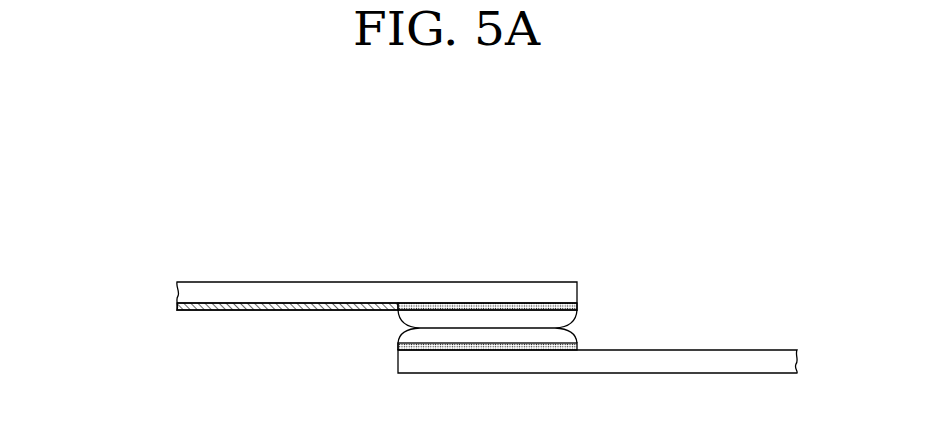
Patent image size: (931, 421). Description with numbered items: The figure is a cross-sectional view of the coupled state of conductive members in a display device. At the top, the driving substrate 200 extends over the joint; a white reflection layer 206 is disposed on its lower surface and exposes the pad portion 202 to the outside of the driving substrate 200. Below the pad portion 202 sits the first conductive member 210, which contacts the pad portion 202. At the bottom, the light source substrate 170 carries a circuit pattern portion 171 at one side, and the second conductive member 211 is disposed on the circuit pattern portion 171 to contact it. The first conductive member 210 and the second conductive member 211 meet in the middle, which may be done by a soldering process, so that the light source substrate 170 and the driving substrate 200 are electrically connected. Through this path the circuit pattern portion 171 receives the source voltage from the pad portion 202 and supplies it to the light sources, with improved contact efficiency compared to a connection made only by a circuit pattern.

The driving substrate 200 is at (183, 294).
The reflection layer 206 is at (183, 308).
The pad portion 202 is at (577, 307).
The first conductive member 210 is at (562, 317).
The second conductive member 211 is at (562, 340).
The circuit pattern portion 171 is at (399, 347).
The light source substrate 170 is at (408, 363).